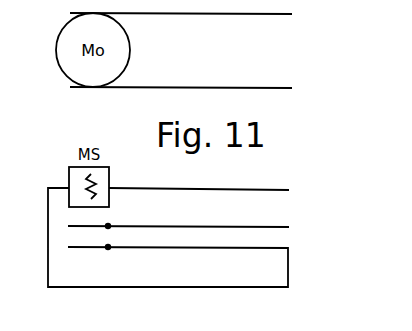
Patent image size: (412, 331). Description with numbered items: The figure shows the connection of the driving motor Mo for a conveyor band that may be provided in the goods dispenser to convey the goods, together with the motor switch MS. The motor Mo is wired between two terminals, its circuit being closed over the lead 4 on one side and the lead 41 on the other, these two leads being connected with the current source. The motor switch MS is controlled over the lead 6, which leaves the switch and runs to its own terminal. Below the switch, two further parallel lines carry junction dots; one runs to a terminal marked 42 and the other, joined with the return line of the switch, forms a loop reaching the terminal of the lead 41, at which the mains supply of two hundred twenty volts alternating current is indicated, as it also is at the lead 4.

The lead 4 is at (336, 14).
The common return line terminal 42 is at (194, 158).
The lead 6 is at (213, 191).
The lead 41 is at (329, 269).